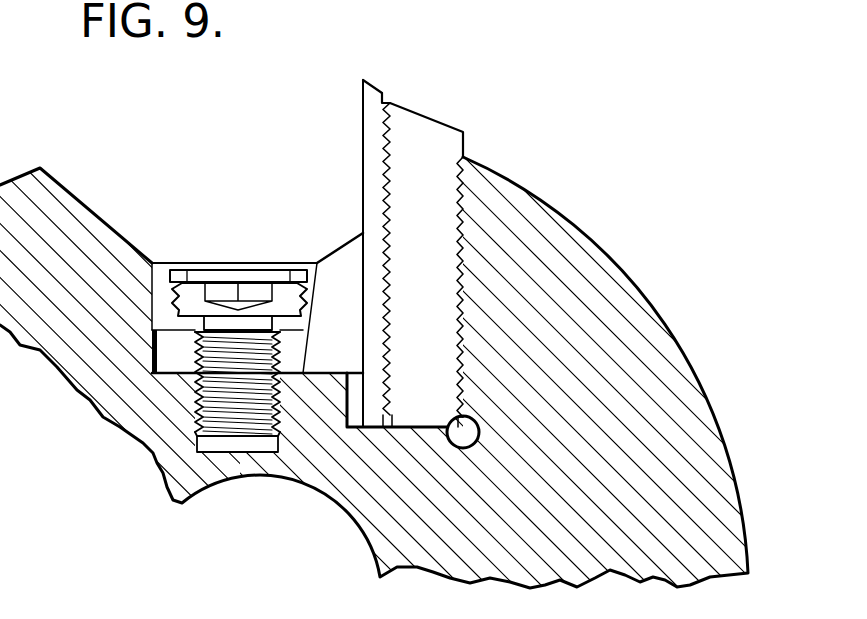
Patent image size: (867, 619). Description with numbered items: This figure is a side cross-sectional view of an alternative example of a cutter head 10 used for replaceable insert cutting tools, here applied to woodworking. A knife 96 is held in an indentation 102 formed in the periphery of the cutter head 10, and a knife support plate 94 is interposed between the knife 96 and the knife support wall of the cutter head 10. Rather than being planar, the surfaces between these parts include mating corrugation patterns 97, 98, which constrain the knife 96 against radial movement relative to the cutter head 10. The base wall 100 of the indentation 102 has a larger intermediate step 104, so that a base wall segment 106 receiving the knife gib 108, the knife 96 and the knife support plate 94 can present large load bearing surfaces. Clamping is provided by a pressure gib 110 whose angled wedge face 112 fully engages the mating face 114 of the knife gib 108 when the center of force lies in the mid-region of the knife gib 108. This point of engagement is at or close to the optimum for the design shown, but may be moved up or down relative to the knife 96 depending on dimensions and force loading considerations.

The cutter head 10 is at (683, 348).
The knife support plate 94 is at (441, 227).
The knife 96 is at (377, 87).
The corrugation pattern 97 is at (392, 128).
The corrugation pattern 98 is at (465, 142).
The base wall 100 is at (157, 367).
The indentation 102 is at (120, 209).
The intermediate step 104 is at (350, 417).
The base wall segment 106 is at (433, 430).
The knife gib 108 is at (348, 240).
The pressure gib 110 is at (160, 270).
The angled wedge face 112 is at (292, 268).
The mating face 114 is at (297, 360).